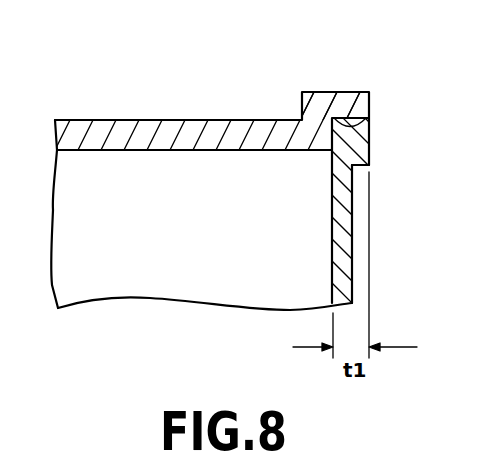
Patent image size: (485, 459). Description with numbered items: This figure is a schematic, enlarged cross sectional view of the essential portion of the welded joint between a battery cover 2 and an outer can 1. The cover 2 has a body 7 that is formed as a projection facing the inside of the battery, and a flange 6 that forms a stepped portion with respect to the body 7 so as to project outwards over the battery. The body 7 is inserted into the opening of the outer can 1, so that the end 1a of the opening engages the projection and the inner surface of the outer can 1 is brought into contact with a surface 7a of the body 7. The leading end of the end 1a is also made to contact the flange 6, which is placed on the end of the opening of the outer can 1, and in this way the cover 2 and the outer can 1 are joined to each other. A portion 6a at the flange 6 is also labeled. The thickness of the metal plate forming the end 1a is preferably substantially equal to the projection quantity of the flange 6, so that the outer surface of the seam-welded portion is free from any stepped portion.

The outer can 1 is at (380, 232).
The end of the opening of the outer can 1a is at (358, 153).
The cover 2 is at (209, 111).
The flange 6 is at (350, 92).
The corner portion 6a is at (371, 126).
The body 7 is at (145, 120).
The surface of the body 7a is at (350, 116).